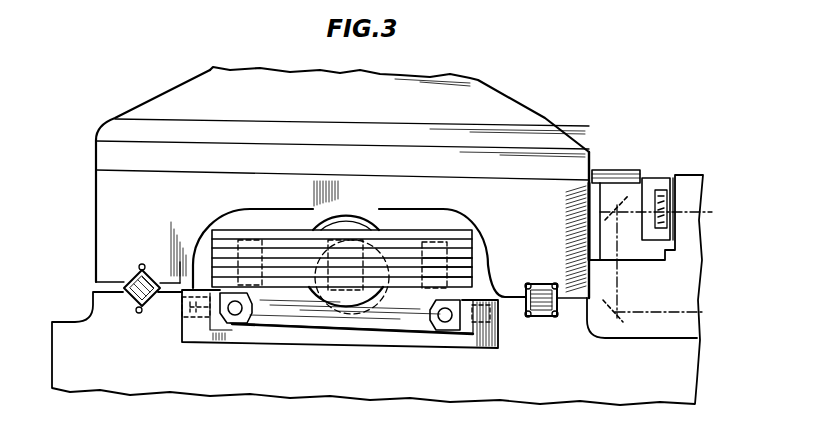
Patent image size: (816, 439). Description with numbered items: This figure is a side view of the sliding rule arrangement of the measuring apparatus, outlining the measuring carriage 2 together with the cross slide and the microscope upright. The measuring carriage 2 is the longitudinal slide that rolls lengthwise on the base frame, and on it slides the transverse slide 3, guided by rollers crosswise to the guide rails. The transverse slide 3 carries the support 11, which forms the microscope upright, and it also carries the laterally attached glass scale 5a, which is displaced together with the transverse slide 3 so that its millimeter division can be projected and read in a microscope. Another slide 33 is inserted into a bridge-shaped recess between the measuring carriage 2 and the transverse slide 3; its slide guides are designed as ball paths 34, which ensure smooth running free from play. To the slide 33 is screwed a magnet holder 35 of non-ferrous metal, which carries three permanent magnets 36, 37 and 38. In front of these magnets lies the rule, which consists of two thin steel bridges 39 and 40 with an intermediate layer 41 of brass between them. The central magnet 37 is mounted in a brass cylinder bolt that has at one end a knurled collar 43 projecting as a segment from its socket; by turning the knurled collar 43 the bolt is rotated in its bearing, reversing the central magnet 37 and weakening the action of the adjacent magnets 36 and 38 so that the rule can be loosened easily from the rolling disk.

The measuring carriage 2 is at (97, 307).
The transverse slide 3 is at (105, 200).
The support 11 is at (500, 106).
The glass scale 5a is at (656, 184).
The slide 33 is at (297, 313).
The ball paths 34 is at (227, 313).
The grille frame 35 is at (400, 248).
The permanent magnet 36 is at (243, 238).
The central magnet 37 is at (373, 215).
The permanent magnet 38 is at (468, 227).
The steel bridge 39 is at (462, 260).
The steel bridge 40 is at (467, 277).
The intermediate layer 41 is at (472, 268).
The knurled collar 43 is at (320, 228).